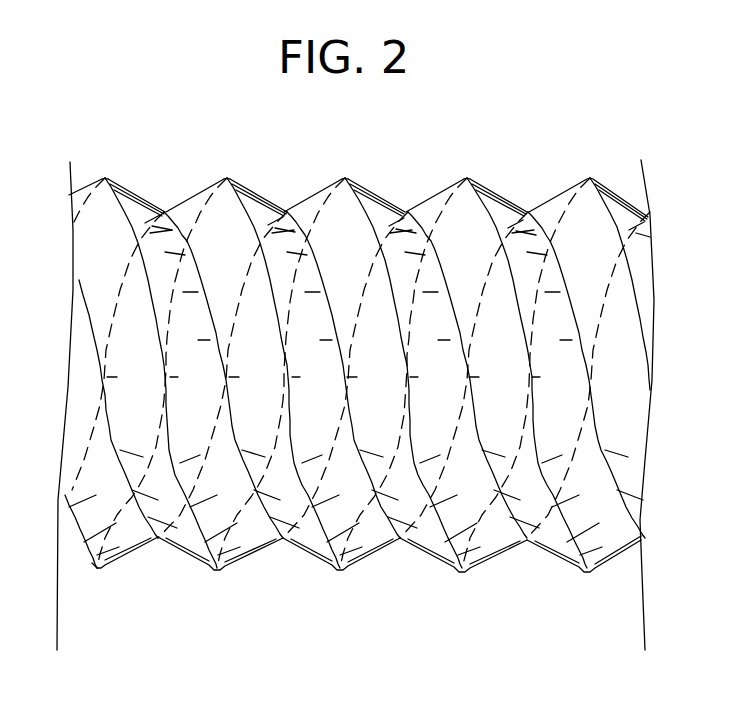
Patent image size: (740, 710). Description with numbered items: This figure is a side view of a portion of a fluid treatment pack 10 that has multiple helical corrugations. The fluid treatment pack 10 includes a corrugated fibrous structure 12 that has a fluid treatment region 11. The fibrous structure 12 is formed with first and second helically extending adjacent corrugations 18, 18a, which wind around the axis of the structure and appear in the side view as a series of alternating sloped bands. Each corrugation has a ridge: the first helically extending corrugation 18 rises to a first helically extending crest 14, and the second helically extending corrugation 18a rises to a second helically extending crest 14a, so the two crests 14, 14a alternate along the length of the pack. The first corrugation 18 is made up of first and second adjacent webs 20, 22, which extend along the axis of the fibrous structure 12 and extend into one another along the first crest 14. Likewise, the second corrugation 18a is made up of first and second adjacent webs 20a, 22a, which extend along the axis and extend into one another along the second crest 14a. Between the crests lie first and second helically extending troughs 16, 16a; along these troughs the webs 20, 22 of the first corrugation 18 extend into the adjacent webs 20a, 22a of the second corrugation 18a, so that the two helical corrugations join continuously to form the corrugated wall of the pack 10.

The fluid treatment pack 10 is at (131, 561).
The fluid treatment region 11 is at (521, 195).
The corrugated fibrous structure 12 is at (498, 556).
The first helically extending crest 14 is at (103, 177).
The second helically extending crest 14a is at (225, 177).
The first helically extending trough 16 is at (170, 200).
The second helically extending trough 16a is at (290, 203).
The first helically extending corrugation 18 is at (421, 553).
The second helically extending corrugation 18a is at (296, 546).
The first web 20 is at (323, 192).
The first web 20a is at (201, 189).
The second web 22 is at (386, 198).
The second web 22a is at (266, 196).